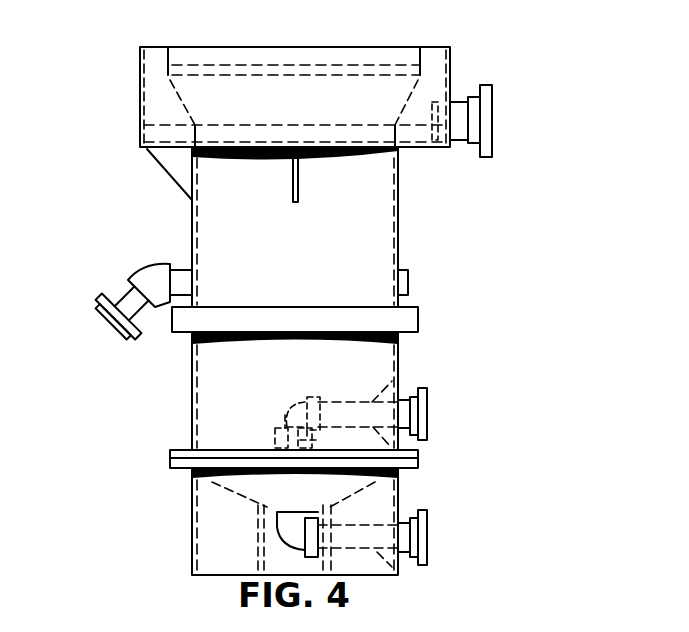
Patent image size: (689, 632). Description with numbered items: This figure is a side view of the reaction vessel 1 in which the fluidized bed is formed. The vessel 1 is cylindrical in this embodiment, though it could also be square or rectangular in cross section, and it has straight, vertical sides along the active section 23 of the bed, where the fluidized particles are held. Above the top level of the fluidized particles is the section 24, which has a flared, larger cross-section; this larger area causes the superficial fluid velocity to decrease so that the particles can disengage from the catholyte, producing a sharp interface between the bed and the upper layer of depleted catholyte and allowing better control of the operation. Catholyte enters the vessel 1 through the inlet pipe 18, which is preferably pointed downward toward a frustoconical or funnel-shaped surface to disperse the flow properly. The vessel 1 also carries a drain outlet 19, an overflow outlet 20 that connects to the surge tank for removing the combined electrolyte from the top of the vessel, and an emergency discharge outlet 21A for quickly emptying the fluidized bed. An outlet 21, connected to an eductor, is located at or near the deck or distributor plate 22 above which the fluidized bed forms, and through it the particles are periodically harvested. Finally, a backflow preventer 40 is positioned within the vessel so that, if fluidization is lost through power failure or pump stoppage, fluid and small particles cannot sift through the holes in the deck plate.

The reaction vessel 1 is at (462, 238).
The inlet pipe 18 is at (428, 413).
The drain outlet 19 is at (428, 542).
The overflow outlet 20 is at (492, 122).
The outlet 21 is at (132, 302).
The emergency discharge outlet 21A is at (408, 282).
The distributor plate 22 is at (400, 320).
The active section 23 is at (210, 232).
The flared section 24 is at (357, 90).
The backflow preventer 40 is at (289, 440).